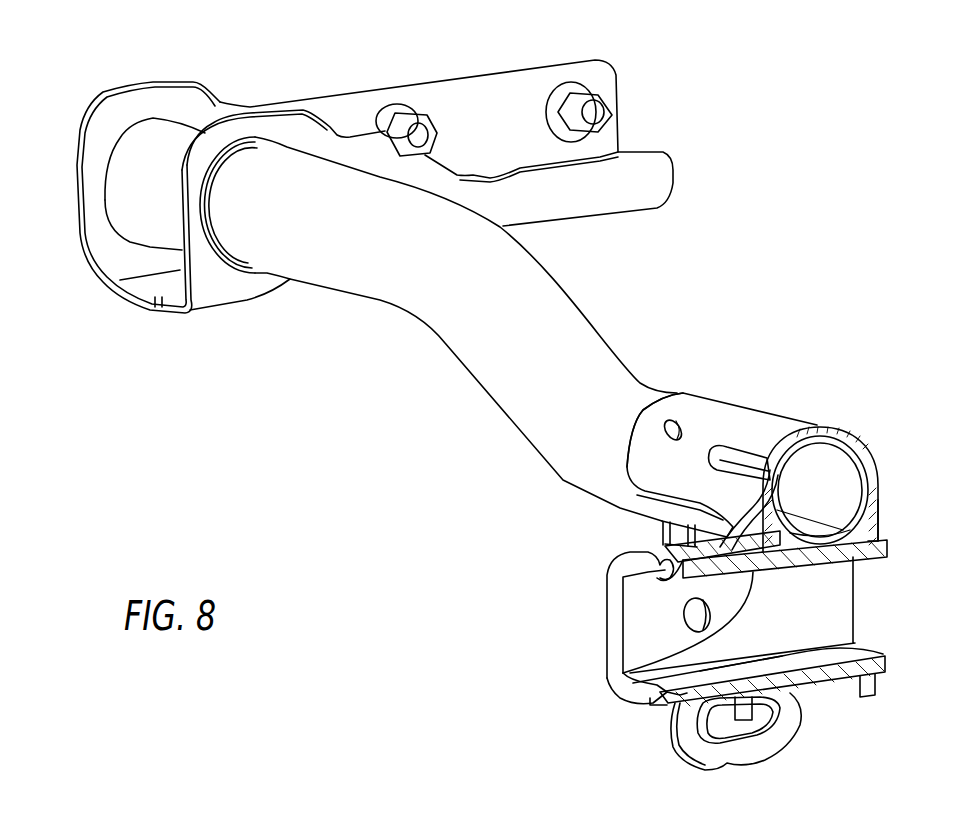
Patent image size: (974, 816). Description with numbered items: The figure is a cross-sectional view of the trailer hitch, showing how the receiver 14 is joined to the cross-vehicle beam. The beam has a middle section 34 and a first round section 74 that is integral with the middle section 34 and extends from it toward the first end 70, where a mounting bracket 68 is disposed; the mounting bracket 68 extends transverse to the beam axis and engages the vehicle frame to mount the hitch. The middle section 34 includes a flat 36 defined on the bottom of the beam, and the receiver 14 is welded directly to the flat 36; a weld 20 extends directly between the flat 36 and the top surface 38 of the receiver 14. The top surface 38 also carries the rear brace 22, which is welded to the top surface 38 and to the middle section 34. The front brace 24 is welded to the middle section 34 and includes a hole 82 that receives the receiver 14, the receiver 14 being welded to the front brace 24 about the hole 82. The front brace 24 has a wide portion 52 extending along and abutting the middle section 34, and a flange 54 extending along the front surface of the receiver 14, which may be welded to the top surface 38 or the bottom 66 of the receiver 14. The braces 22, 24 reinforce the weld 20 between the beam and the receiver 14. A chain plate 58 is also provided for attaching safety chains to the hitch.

The receiver 14 is at (627, 690).
The weld 20 is at (790, 558).
The rear brace 22 is at (864, 438).
The front brace 24 is at (732, 418).
The middle section 34 is at (835, 430).
The flat 36 is at (820, 540).
The top surface 38 is at (617, 675).
The wide portion 52 is at (687, 397).
The flange 54 is at (661, 525).
The chain plate 58 is at (817, 685).
The bottom 66 is at (852, 647).
The mounting bracket 68 is at (472, 108).
The first end 70 is at (280, 299).
The first round section 74 is at (458, 310).
The hole 82 is at (873, 546).